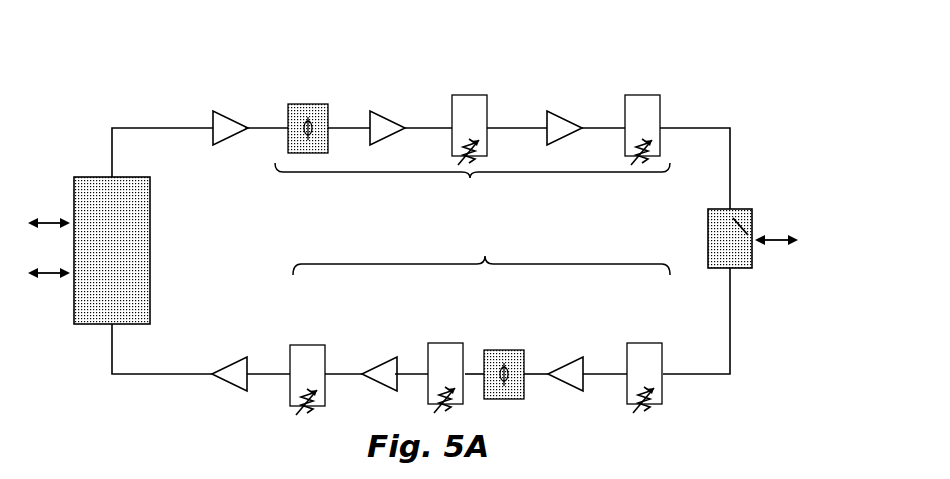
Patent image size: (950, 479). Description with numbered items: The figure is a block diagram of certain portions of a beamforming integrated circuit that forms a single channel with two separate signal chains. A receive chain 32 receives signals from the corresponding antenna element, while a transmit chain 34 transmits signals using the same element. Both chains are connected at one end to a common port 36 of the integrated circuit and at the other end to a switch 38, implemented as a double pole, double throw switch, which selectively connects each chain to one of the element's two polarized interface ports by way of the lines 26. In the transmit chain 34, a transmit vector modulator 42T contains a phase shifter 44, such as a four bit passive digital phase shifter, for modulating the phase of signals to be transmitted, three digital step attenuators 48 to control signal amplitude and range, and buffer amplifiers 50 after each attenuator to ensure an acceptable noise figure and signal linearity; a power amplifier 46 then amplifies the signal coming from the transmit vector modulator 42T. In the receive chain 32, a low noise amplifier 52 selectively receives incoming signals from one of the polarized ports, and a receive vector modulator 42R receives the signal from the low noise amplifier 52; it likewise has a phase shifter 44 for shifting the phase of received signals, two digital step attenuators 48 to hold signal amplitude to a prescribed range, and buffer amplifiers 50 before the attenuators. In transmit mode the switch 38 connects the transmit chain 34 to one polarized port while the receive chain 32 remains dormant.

The lines 26 is at (49, 226).
The receive chain 32 is at (683, 73).
The transmit chain 34 is at (684, 423).
The common port 36 is at (794, 243).
The switch 38 is at (112, 250).
The receive vector modulator 42R is at (472, 188).
The transmit vector modulator 42T is at (481, 249).
The phase shifter 44 is at (318, 103).
The power amplifier 46 is at (238, 356).
The digital step attenuator 48 is at (465, 95).
The buffer amplifier 50 is at (392, 112).
The low noise amplifier 52 is at (229, 128).